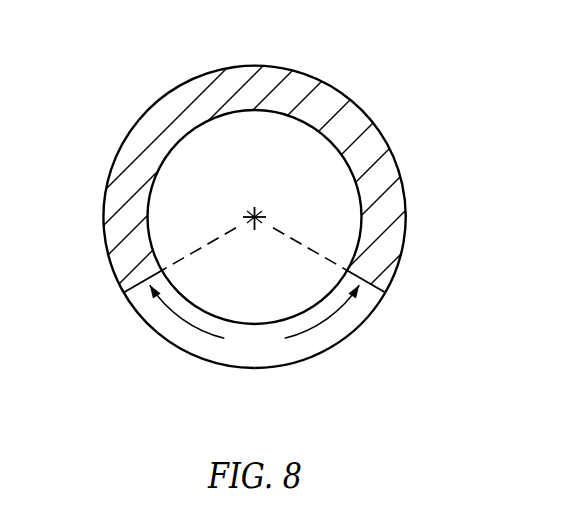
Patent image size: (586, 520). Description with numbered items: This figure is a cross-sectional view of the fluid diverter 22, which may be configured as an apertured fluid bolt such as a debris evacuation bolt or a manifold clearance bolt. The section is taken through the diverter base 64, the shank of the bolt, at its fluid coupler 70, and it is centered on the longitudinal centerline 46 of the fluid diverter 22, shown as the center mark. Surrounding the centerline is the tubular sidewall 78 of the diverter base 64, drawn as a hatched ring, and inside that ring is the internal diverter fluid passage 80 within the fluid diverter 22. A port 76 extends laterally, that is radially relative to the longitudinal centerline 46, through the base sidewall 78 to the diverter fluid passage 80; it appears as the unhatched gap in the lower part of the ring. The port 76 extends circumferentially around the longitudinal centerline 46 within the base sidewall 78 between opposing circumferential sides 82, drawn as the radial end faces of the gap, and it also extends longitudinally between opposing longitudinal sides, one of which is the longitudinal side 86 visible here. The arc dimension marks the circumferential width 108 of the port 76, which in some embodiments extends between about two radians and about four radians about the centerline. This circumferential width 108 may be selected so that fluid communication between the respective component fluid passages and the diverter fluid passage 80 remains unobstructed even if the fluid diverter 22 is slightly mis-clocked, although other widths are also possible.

The fluid diverter 22 is at (442, 74).
The longitudinal centerline 46 is at (251, 202).
The diverter base 64 is at (293, 225).
The fluid coupler 70 is at (424, 149).
The port 76 is at (333, 355).
The tubular sidewall 78 is at (105, 227).
The diverter fluid passage 80 is at (321, 158).
The circumferential sides 82 is at (133, 291).
The longitudinal side 86 is at (212, 350).
The circumferential width 108 is at (255, 292).